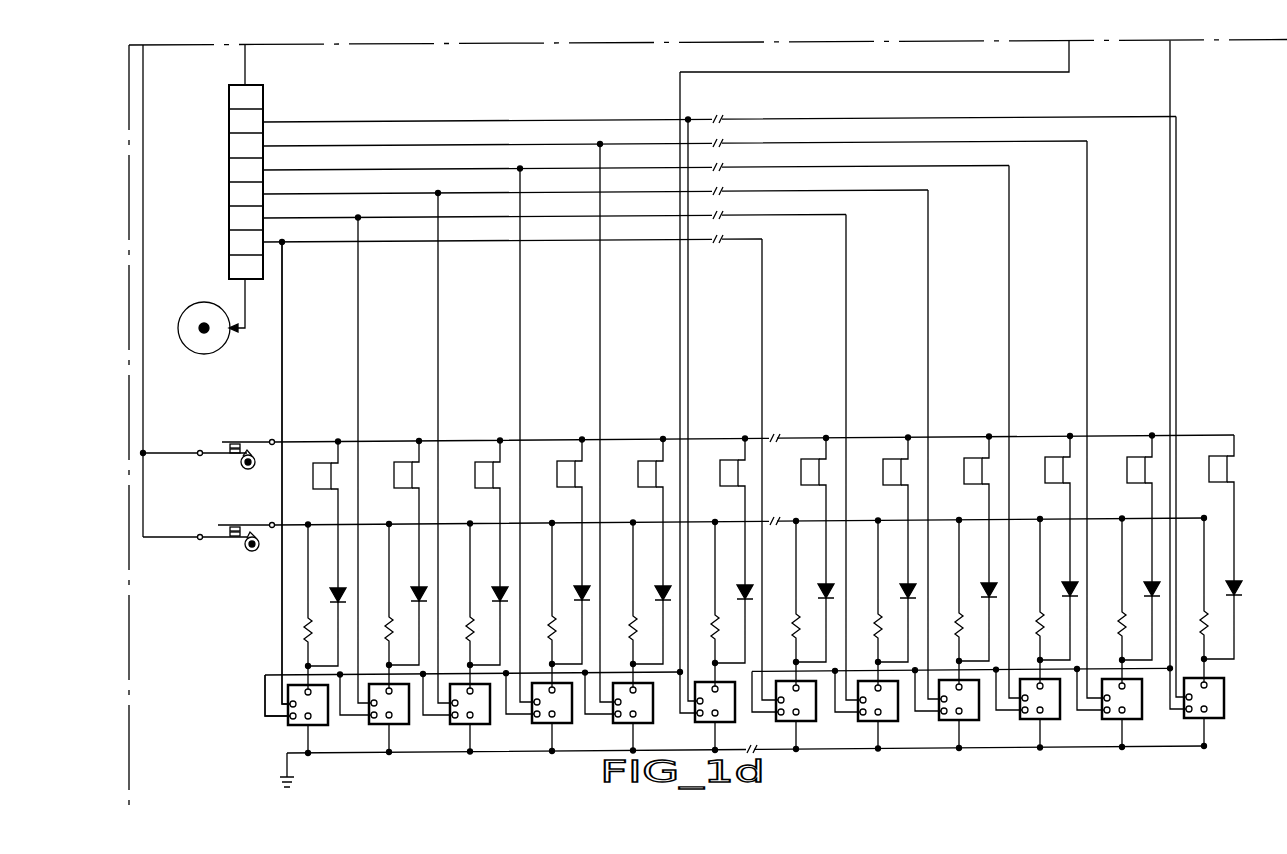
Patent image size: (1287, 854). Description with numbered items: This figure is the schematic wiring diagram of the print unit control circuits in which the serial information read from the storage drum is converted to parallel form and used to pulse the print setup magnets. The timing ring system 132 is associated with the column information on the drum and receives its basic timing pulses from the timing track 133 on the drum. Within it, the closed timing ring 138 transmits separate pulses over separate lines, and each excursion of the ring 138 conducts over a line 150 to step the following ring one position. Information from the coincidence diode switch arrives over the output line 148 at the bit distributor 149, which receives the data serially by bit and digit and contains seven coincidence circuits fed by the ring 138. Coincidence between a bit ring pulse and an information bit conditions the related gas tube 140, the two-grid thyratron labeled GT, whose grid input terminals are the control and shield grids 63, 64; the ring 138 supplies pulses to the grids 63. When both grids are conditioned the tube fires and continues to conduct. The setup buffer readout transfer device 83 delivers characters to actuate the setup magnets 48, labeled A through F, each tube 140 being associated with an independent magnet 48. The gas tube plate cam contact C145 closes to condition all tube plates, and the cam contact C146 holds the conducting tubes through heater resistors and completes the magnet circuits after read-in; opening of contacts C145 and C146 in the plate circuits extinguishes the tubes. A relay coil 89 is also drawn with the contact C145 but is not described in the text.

The line 150 is at (245, 57).
The timing ring system 132 is at (323, 103).
The timing ring 138 is at (232, 174).
The bit distributor 149 is at (572, 120).
The output line 148 is at (680, 88).
The timing track 133 is at (208, 352).
The magnet pulse cam contact C146 is at (234, 441).
The gas tube plate cam contact C145 is at (234, 524).
The relay coil 89 is at (247, 551).
The setup magnets 48 is at (400, 463).
The setup buffer readout transfer device 83 is at (631, 406).
The control grid 63 is at (280, 694).
The shield grid 64 is at (292, 727).
The gas tube 140 is at (539, 727).